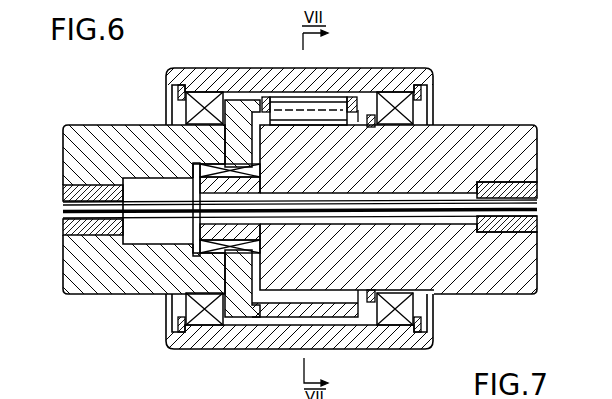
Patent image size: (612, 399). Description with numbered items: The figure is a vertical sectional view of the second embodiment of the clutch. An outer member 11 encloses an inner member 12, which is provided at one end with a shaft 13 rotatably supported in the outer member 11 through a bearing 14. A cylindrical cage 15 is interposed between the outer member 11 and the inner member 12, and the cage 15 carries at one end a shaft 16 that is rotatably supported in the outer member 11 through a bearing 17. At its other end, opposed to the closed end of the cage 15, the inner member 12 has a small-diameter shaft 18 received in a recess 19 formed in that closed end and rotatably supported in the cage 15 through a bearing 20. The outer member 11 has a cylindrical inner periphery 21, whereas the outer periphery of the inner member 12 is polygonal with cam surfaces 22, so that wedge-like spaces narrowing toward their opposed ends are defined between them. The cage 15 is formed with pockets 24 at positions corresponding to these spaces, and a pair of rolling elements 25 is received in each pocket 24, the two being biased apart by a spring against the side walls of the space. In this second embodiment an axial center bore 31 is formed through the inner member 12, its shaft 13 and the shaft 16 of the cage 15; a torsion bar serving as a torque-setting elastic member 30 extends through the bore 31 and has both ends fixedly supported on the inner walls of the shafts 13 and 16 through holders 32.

The outer member 11 is at (195, 95).
The inner member 12 is at (326, 150).
The shaft 13 is at (520, 128).
The bearing 14 is at (424, 67).
The cylindrical cage 15 is at (240, 100).
The shaft 16 is at (83, 127).
The bearing 17 is at (187, 96).
The small-diameter shaft 18 is at (199, 246).
The recess 19 is at (212, 254).
The bearing 20 is at (233, 256).
The inner periphery 21 is at (331, 122).
The cam surfaces 22 is at (401, 92).
The pockets 24 is at (267, 104).
The rolling elements 25 is at (316, 107).
The torque-setting elastic member 30 is at (145, 178).
The axial center bore 31 is at (90, 234).
The holders 32 is at (62, 182).